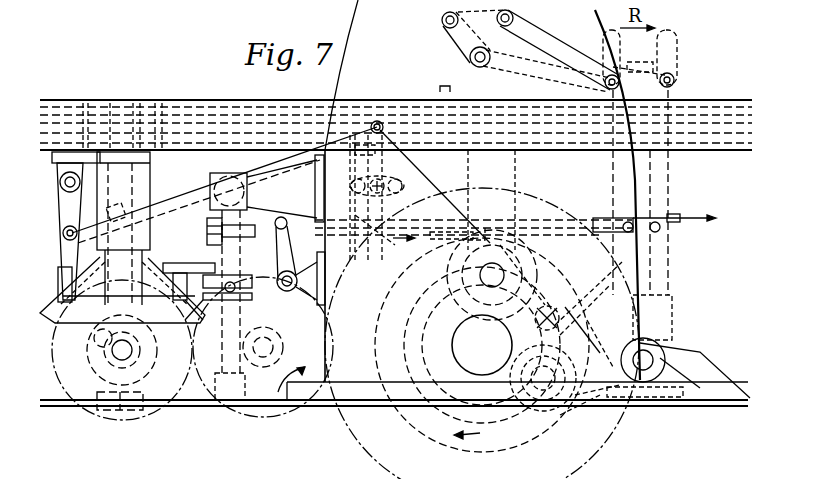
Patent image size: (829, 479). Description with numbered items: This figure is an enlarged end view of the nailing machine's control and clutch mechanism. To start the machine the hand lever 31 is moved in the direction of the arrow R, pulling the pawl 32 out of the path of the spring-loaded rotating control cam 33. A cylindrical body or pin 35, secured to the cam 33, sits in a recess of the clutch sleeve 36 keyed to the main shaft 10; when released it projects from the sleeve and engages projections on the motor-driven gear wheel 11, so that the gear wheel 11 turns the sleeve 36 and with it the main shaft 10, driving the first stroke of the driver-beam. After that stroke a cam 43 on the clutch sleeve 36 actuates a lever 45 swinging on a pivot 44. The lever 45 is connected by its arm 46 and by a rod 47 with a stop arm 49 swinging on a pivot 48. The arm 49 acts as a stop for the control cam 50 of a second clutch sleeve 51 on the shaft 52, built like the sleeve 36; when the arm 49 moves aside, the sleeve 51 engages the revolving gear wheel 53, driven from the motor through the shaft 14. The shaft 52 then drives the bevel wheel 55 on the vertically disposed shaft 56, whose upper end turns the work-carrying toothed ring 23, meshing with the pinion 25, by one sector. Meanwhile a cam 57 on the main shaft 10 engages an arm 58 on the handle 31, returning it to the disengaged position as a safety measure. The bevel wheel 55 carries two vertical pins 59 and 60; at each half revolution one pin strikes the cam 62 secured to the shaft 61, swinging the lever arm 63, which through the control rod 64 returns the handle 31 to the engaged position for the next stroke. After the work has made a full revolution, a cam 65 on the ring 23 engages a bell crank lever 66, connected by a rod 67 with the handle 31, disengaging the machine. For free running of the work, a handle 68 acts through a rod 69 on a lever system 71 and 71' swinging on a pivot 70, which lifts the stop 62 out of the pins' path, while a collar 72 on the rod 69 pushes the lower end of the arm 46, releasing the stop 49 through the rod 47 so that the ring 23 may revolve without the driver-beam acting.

The main shaft 10 is at (482, 333).
The gear wheel 11 is at (605, 420).
The shaft 14 is at (273, 347).
The ring 23 is at (190, 103).
The pinion 25 is at (157, 104).
The hand lever 31 is at (665, 42).
The pawl 32 is at (585, 300).
The control cam 33 is at (560, 320).
The cylindrical body or pin 35 is at (538, 318).
The clutch sleeve 36 is at (428, 405).
The cam 43 is at (560, 420).
The pivot 44 is at (384, 182).
The lever 45 is at (473, 186).
The arm 46 is at (348, 191).
The rod 47 is at (213, 171).
The pivot 48 is at (60, 183).
The arm 49 is at (75, 207).
The control cam 50 is at (122, 350).
The clutch sleeve 51 is at (92, 367).
The shaft 52 is at (125, 353).
The gear wheel 53 is at (140, 384).
The bevel wheel 55 is at (130, 297).
The vertically disposed shaft 56 is at (125, 268).
The cam 57 is at (468, 263).
The arm 58 is at (590, 396).
The pin 59 is at (176, 272).
The pin 60 is at (62, 276).
The shaft 61 is at (228, 348).
The cam 62 is at (190, 267).
The lever arm 63 is at (207, 240).
The control rod 64 is at (262, 237).
The cam 65 is at (463, 52).
The bell crank lever 66 is at (492, 68).
The rod 67 is at (560, 62).
The handle 68 is at (656, 222).
The rod 69 is at (337, 223).
The pivot 70 is at (291, 292).
The lever system 71 is at (298, 249).
The lever system 71' is at (243, 298).
The collar 72 is at (362, 230).